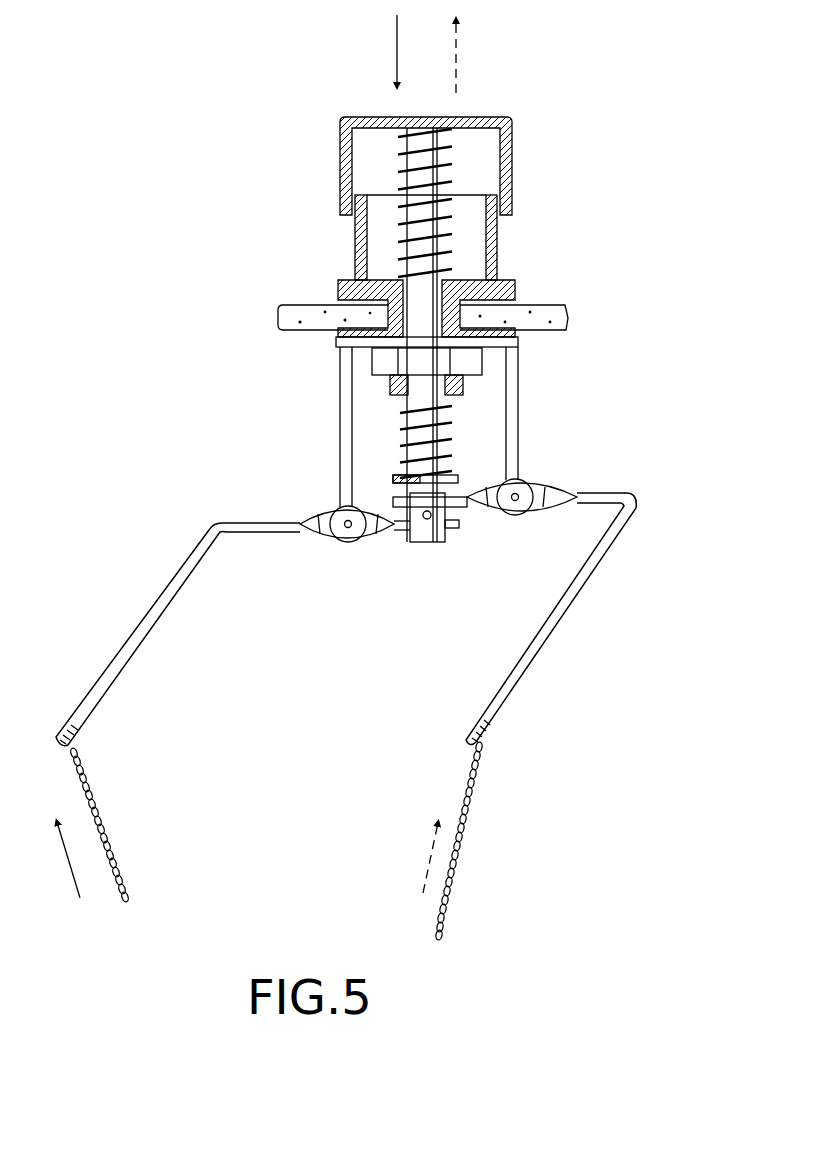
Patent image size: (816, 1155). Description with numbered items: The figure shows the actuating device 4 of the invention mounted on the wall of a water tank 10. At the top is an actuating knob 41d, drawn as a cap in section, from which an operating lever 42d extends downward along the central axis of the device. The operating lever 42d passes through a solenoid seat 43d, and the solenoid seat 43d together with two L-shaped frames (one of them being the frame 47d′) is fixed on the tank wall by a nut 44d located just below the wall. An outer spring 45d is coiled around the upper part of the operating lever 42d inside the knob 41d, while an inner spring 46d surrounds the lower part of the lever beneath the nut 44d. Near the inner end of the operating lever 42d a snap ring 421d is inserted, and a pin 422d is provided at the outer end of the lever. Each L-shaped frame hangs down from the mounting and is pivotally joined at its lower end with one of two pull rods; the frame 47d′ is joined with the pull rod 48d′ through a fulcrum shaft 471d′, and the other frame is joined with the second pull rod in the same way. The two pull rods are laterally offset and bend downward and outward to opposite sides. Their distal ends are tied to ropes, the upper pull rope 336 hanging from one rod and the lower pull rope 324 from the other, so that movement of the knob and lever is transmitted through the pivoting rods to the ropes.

The actuating device 4 is at (236, 166).
The water tank 10 is at (300, 306).
The actuating knob 41d is at (519, 118).
The outer spring 45d is at (445, 176).
The operating lever 42d is at (430, 228).
The solenoid seat 43d is at (497, 258).
The nut 44d is at (482, 352).
The inner spring 46d is at (400, 418).
The L-shaped frame 47d′ is at (340, 436).
The snap ring 421d is at (477, 462).
The pin 422d is at (425, 542).
The fulcrum shaft 471d′ is at (347, 530).
The pull rod 48d′ is at (173, 580).
The upper pull rope 336 is at (108, 834).
The lower pull rope 324 is at (459, 862).